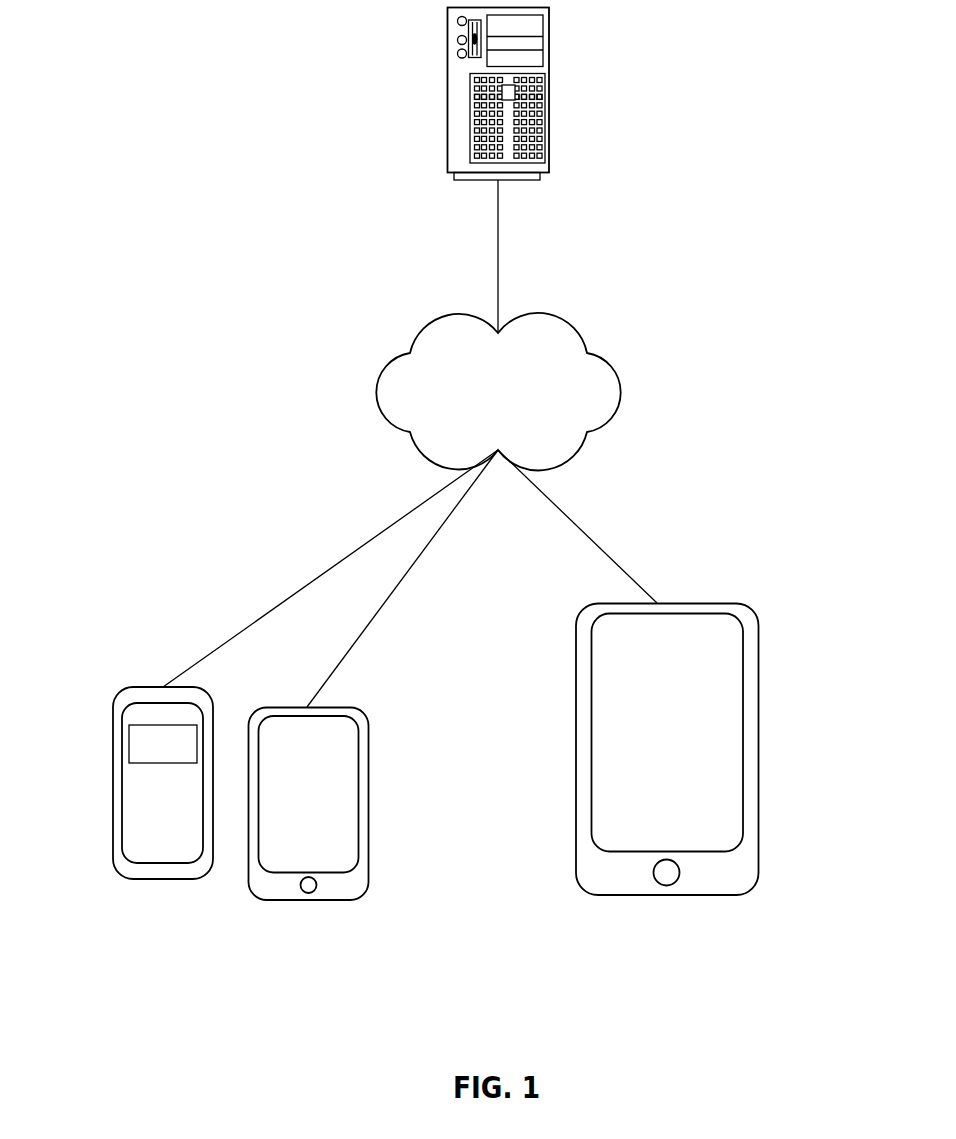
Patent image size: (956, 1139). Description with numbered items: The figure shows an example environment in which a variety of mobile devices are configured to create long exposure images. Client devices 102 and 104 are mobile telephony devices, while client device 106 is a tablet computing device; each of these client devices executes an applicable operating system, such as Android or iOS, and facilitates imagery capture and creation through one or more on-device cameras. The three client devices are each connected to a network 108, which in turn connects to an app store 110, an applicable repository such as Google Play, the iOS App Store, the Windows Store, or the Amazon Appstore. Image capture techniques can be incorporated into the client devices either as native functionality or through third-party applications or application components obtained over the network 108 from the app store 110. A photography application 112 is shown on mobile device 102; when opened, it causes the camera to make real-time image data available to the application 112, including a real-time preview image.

The client device 102 is at (125, 783).
The client device 104 is at (368, 767).
The client device 106 is at (758, 747).
The network 108 is at (618, 370).
The app store 110 is at (549, 89).
The photography application 112 is at (192, 764).